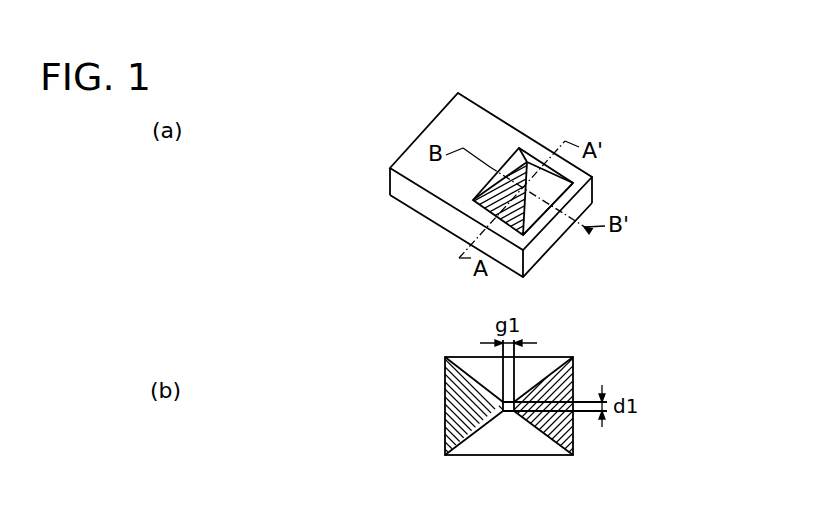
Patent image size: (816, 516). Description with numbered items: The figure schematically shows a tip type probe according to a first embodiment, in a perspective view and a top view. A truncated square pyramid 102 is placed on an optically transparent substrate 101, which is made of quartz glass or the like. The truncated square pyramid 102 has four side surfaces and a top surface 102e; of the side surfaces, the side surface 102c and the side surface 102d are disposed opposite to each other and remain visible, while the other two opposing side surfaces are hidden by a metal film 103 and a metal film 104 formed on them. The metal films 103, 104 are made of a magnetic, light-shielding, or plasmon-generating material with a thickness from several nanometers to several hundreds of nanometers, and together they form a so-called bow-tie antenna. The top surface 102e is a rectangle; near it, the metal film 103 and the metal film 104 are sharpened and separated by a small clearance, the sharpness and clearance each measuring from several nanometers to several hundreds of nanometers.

The optically transparent substrate 101 is at (453, 118).
The truncated square pyramid 102 is at (545, 184).
The side surface 102c is at (473, 200).
The side surface 102d is at (547, 208).
The top surface 102e is at (519, 150).
The metal film 103 is at (495, 215).
The metal film 104 is at (533, 163).